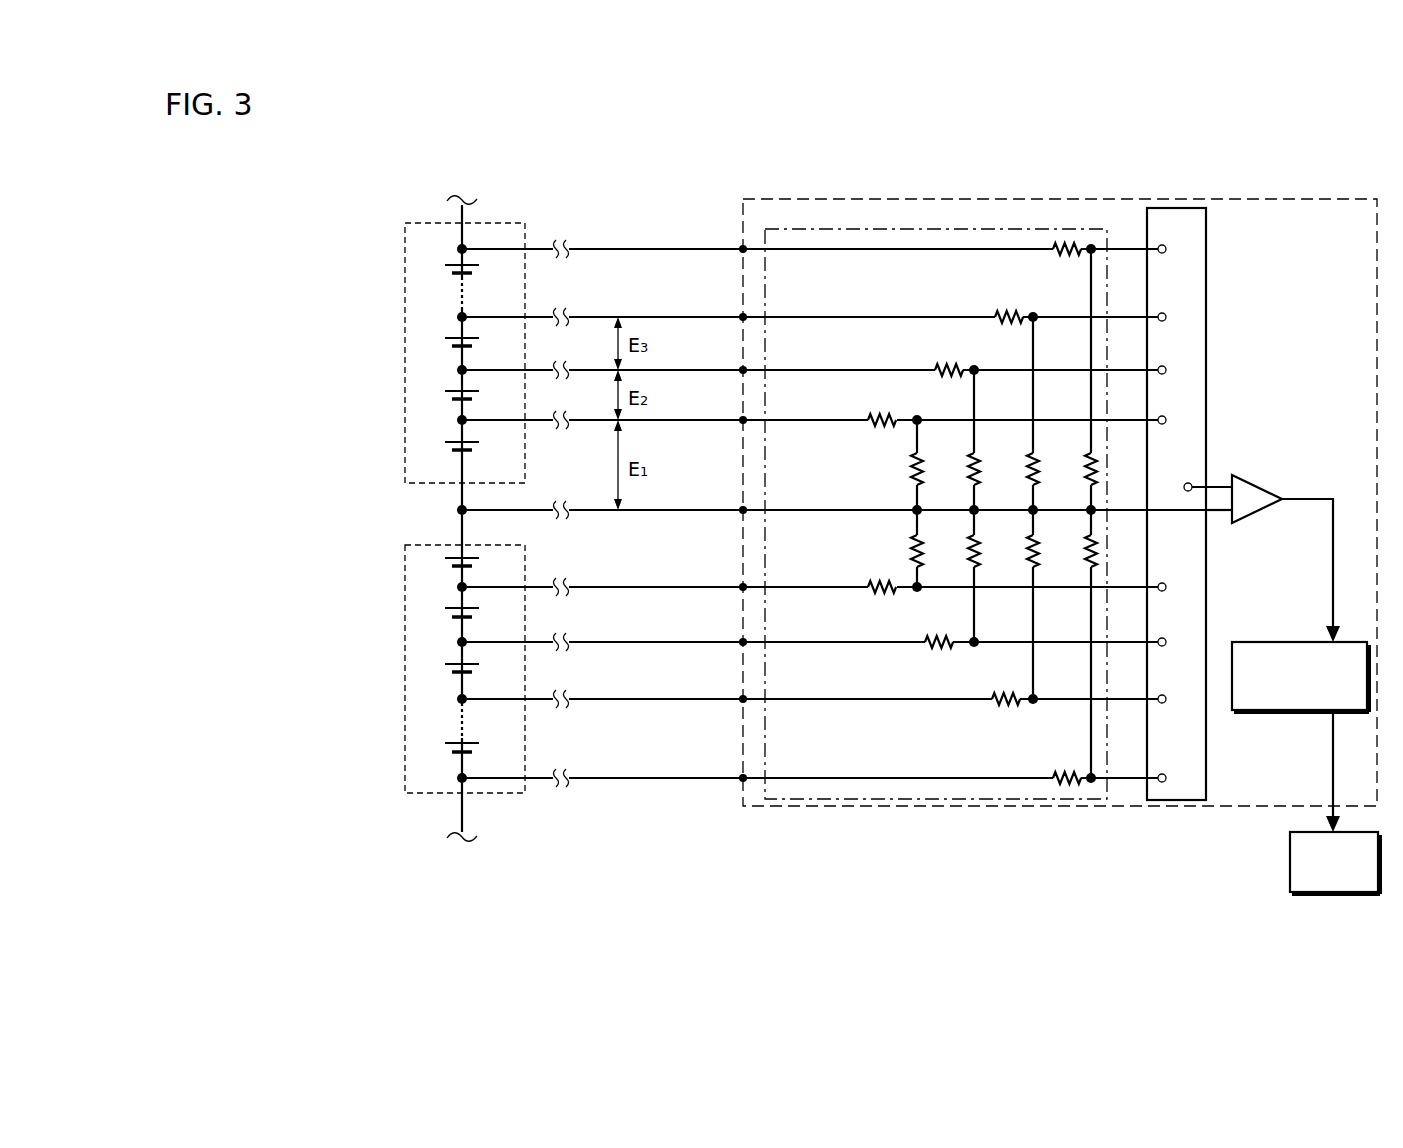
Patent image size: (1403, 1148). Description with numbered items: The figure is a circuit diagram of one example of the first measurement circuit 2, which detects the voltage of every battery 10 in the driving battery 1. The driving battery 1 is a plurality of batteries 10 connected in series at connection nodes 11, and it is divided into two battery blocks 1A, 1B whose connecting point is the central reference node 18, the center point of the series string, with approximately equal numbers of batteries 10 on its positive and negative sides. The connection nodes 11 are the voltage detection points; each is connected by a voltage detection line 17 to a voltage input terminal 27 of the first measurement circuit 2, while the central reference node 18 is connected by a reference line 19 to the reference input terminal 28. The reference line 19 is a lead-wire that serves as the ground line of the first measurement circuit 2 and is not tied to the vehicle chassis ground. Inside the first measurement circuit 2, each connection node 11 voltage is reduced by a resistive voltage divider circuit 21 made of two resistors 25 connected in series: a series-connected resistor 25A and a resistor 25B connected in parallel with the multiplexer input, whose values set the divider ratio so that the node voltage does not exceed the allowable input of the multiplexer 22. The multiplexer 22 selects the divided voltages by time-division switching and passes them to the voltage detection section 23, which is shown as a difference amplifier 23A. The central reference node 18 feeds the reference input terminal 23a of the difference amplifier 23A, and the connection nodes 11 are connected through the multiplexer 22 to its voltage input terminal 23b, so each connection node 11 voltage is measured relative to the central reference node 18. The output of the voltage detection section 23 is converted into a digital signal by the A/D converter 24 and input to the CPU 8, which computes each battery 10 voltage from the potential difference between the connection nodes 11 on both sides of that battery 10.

The driving battery 1 is at (284, 450).
The battery block 1A is at (405, 437).
The battery block 1B is at (405, 580).
The first measurement circuit 2 is at (897, 199).
The CPU 8 is at (1290, 848).
The battery 10 is at (450, 263).
The connection node 11 is at (460, 249).
The voltage detection line 17 is at (685, 248).
The central reference node 18 is at (465, 513).
The reference line 19 is at (672, 510).
The resistive voltage divider circuit 21 is at (765, 735).
The multiplexer 22 is at (1172, 208).
The voltage detection section 23 is at (1275, 503).
The difference amplifier 23A is at (1265, 485).
The reference input terminal 23a is at (1232, 523).
The voltage input terminal 23b is at (1230, 486).
The A/D converter 24 is at (1292, 642).
The resistor 25 is at (1098, 574).
The series-connected resistor 25A is at (1000, 312).
The resistor connected in parallel with multiplexer input 25B is at (1035, 462).
The voltage input terminal 27 is at (746, 252).
The reference input terminal 28 is at (746, 510).